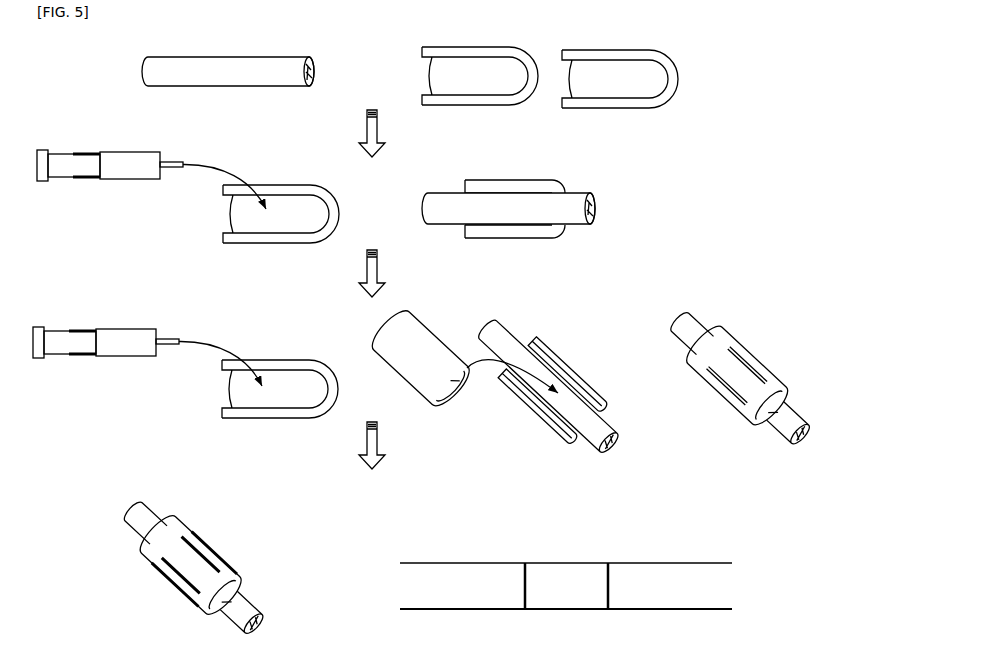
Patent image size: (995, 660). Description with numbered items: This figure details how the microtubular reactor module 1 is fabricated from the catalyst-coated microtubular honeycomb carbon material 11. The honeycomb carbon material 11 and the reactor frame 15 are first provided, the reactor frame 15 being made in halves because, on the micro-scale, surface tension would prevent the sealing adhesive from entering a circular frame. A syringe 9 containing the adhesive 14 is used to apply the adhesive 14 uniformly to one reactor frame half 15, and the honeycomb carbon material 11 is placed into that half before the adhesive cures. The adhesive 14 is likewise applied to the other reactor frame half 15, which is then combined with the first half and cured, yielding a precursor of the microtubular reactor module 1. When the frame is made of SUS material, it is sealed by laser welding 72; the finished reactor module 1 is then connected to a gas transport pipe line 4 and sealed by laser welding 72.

The microtubular reactor module 1 is at (808, 307).
The gas transport pipe line 4 is at (683, 572).
The plunger of syringe 9 is at (88, 177).
The catalyst-coated microtubular honeycomb carbon material 11 is at (237, 73).
The adhesive 14 is at (128, 166).
The reactor frame 15 is at (485, 80).
The laser welding 72 is at (230, 563).